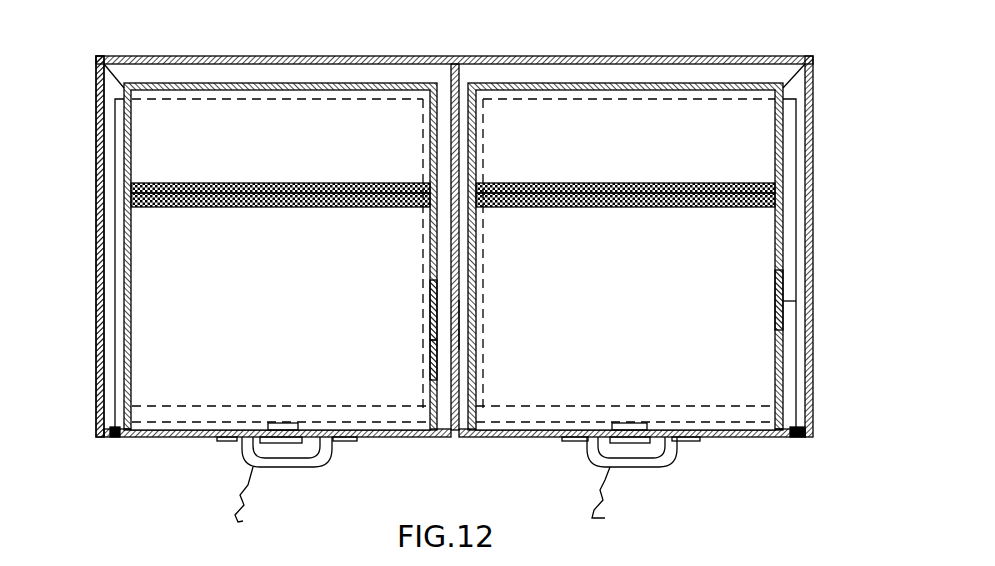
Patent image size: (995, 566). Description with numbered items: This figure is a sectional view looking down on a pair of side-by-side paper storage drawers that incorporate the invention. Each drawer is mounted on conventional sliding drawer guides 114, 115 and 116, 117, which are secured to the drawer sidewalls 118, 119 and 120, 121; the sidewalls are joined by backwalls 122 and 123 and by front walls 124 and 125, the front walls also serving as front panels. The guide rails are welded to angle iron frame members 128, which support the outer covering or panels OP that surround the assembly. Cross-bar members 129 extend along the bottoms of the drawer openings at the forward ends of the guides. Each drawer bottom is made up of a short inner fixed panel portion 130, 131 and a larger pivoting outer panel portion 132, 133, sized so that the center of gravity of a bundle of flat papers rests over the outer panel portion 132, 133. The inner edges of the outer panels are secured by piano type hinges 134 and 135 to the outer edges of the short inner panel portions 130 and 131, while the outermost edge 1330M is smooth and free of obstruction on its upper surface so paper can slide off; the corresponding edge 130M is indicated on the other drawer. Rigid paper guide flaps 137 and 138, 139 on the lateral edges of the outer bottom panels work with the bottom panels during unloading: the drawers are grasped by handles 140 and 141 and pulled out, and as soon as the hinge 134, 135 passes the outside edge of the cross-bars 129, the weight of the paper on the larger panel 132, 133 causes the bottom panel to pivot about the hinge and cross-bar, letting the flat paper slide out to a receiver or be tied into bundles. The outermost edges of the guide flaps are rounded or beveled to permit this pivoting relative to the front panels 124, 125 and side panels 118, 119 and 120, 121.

The sliding drawer guide 114 is at (108, 362).
The sliding drawer guide 115 is at (442, 310).
The sliding drawer guide 116 is at (460, 325).
The sliding drawer guide 117 is at (795, 326).
The drawer sidewall 118 is at (121, 300).
The drawer sidewall 119 is at (423, 283).
The drawer sidewall 120 is at (469, 274).
The drawer sidewall 121 is at (796, 301).
The backwall 122 is at (225, 83).
The backwall 123 is at (633, 83).
The front wall 124 is at (177, 440).
The front wall 125 is at (508, 440).
The angle iron frame member 128 is at (342, 68).
The cross-bar member 129 is at (283, 414).
The inner fixed panel portion 130 is at (262, 156).
The inner fixed panel portion 131 is at (652, 149).
The outer panel portion 132 is at (256, 306).
The outer panel portion 133 is at (646, 323).
The piano type hinge 134 is at (330, 186).
The piano type hinge 135 is at (507, 185).
The paper guide flap 137 is at (431, 361).
The paper guide flap 138 is at (483, 376).
The paper guide flap 139 is at (776, 292).
The handle 140 is at (317, 462).
The handle 141 is at (645, 462).
The left bottom end 130M is at (148, 434).
The outermost edge 1330M is at (735, 433).
The outer covering or panels OP is at (517, 56).